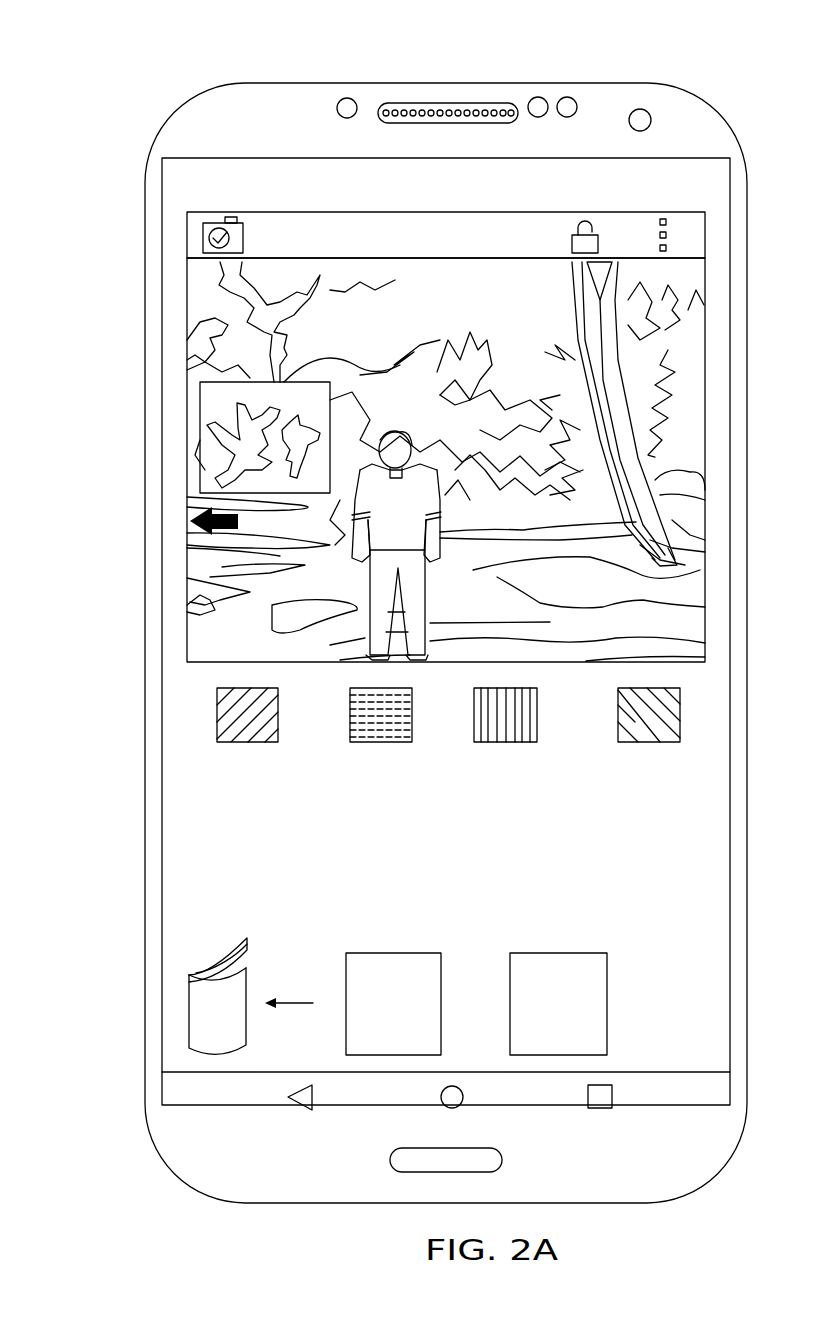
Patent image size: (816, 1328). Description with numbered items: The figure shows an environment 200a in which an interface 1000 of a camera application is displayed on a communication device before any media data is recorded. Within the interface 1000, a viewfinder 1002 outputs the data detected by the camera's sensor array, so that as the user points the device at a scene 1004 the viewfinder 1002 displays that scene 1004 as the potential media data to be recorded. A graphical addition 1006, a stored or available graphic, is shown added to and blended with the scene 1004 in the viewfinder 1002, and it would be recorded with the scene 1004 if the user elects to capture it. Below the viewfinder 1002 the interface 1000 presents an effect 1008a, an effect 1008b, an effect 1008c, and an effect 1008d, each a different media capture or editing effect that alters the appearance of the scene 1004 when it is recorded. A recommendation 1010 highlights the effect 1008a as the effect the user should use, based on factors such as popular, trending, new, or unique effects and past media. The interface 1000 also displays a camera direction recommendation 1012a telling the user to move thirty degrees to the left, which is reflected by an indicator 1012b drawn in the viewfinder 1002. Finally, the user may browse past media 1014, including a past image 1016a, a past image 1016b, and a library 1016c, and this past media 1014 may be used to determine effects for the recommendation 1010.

The environment 200a is at (566, 47).
The interface 1000 is at (530, 201).
The viewfinder 1002 is at (558, 305).
The scene 1004 is at (612, 518).
The graphical addition 1006 is at (211, 375).
The effect 1008a is at (295, 787).
The effect 1008b is at (425, 787).
The effect 1008c is at (553, 787).
The effect 1008d is at (688, 787).
The recommendation 1010 is at (210, 712).
The camera direction recommendation 1012a is at (697, 897).
The indicator 1012b is at (190, 521).
The past media 1014 is at (589, 943).
The past image 1016a is at (436, 1018).
The past image 1016b is at (601, 1018).
The library 1016c is at (221, 956).